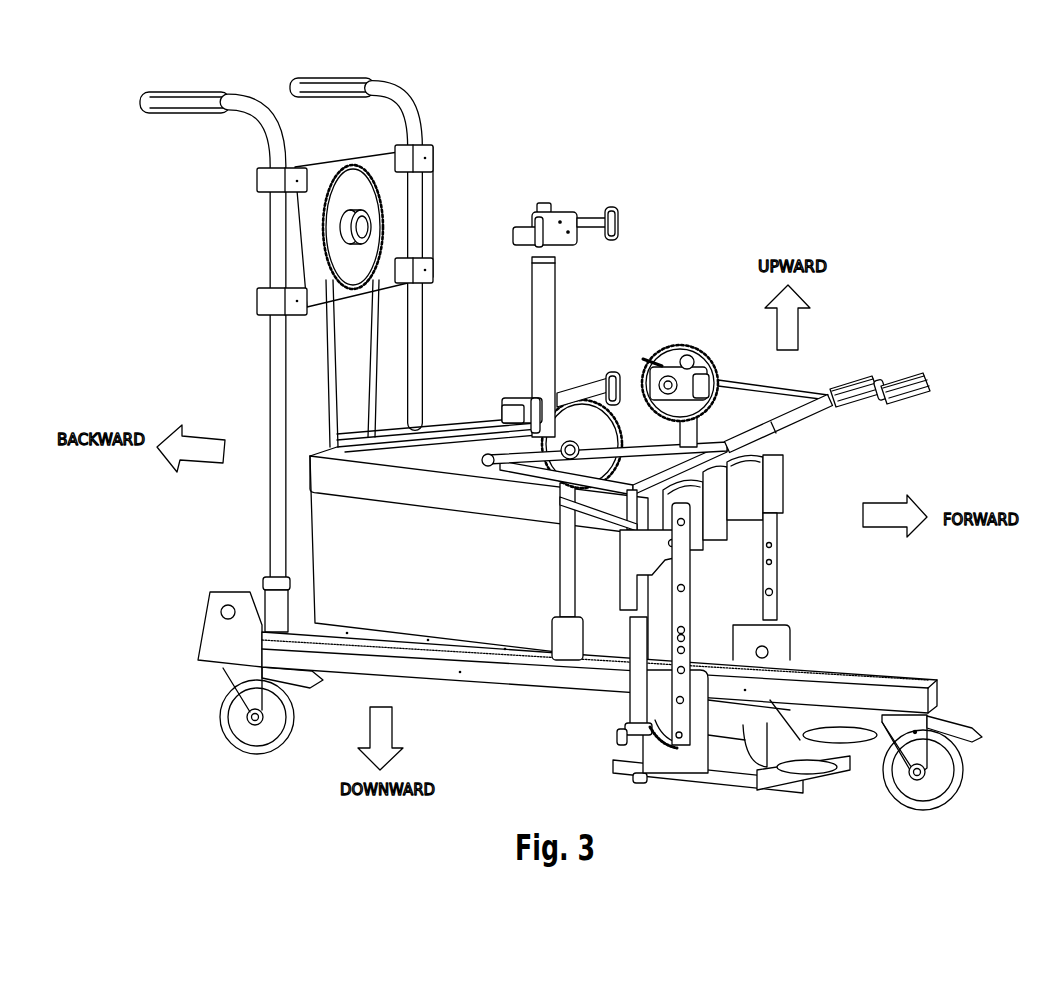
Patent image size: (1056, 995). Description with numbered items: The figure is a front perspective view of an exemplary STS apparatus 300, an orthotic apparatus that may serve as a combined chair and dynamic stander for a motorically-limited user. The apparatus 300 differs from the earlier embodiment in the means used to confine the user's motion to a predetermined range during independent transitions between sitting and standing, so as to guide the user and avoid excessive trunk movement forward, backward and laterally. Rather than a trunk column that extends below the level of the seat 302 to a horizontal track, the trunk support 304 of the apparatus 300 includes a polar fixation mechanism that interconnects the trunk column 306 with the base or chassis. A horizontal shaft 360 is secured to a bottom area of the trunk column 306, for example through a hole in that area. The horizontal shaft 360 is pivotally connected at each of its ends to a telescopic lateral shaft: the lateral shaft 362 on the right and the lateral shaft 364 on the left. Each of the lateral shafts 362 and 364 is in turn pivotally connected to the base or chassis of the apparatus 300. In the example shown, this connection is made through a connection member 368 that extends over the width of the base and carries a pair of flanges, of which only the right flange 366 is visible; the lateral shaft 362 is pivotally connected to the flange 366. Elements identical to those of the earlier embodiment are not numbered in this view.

The STS apparatus 300 is at (785, 145).
The seat 302 is at (405, 457).
The trunk support 304 is at (524, 320).
The trunk column 306 is at (542, 300).
The horizontal shaft 360 is at (524, 402).
The lateral shaft 362 is at (545, 488).
The lateral shaft 364 is at (643, 433).
The flange 366 is at (630, 573).
The connection member 368 is at (730, 567).